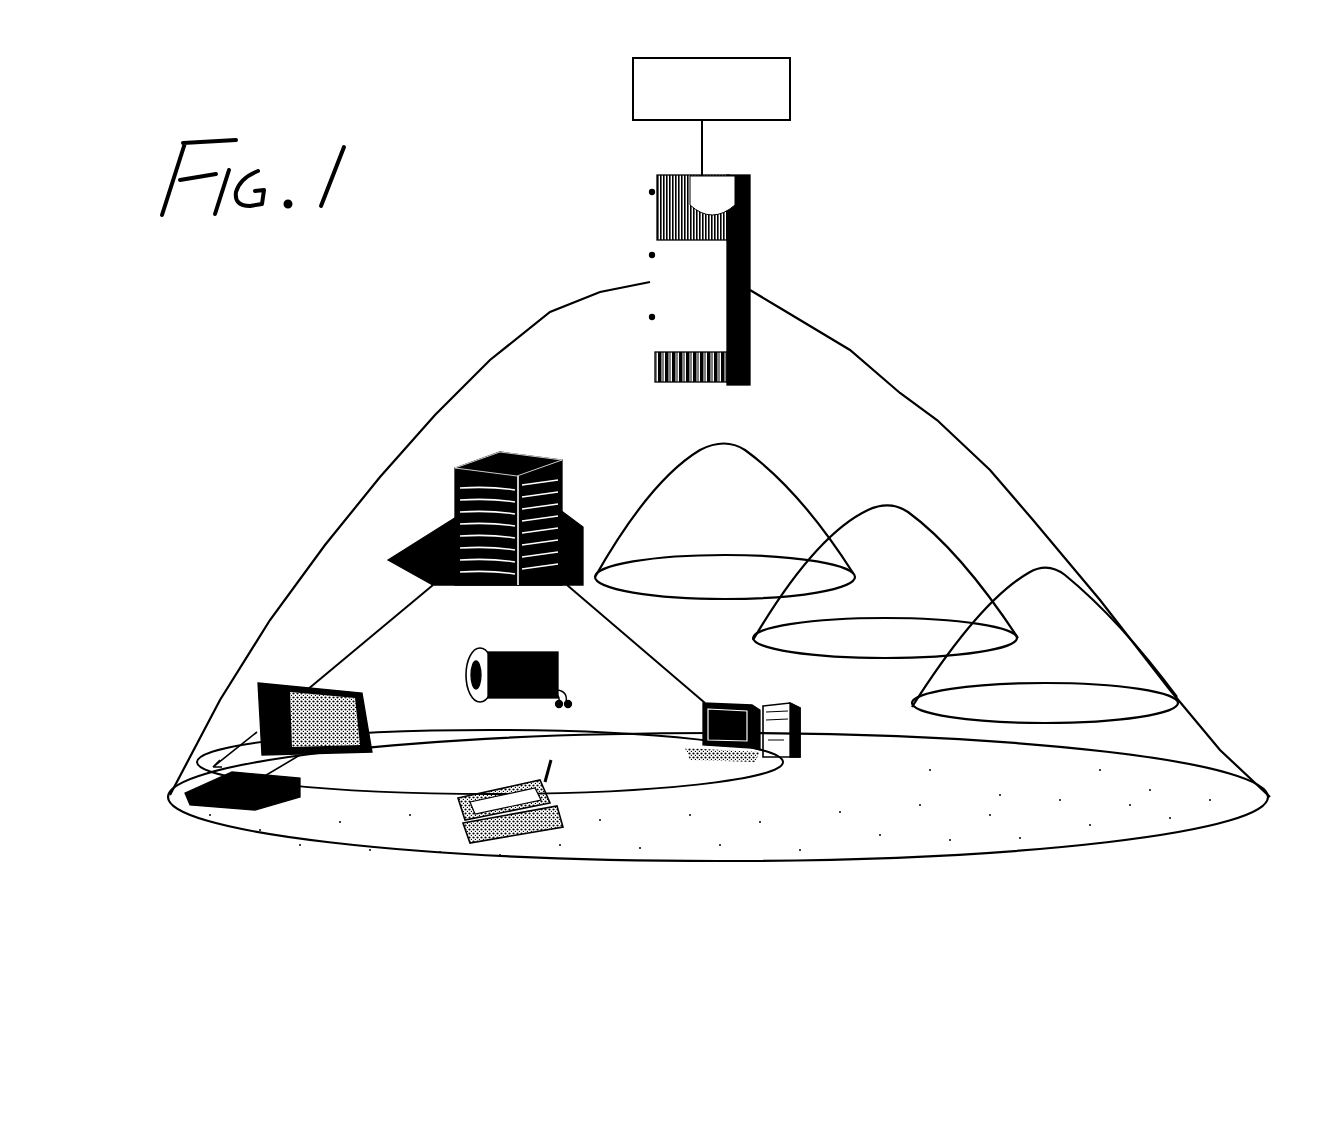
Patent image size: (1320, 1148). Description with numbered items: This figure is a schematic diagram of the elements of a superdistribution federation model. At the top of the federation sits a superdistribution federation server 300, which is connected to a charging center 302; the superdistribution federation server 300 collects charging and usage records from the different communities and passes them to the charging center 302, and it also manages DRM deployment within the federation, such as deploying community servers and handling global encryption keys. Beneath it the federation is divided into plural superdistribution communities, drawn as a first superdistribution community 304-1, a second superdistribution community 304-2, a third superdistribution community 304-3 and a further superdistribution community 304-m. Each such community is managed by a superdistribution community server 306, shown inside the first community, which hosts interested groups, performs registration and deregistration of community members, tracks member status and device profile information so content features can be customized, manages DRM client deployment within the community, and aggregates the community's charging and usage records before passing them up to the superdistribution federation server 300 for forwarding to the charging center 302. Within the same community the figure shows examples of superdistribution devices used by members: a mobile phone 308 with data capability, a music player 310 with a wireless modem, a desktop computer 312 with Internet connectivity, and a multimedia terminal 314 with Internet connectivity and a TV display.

The superdistribution federation server 300 is at (750, 198).
The charging center 302 is at (792, 78).
The superdistribution community 304-1 is at (383, 617).
The superdistribution community 304-2 is at (760, 448).
The superdistribution community 304-3 is at (882, 507).
The superdistribution community 304-m is at (1028, 560).
The superdistribution community server 306 is at (548, 462).
The mobile phone 308 is at (488, 785).
The music player 310 is at (560, 668).
The desktop computer 312 is at (740, 702).
The multimedia terminal 314 is at (333, 688).